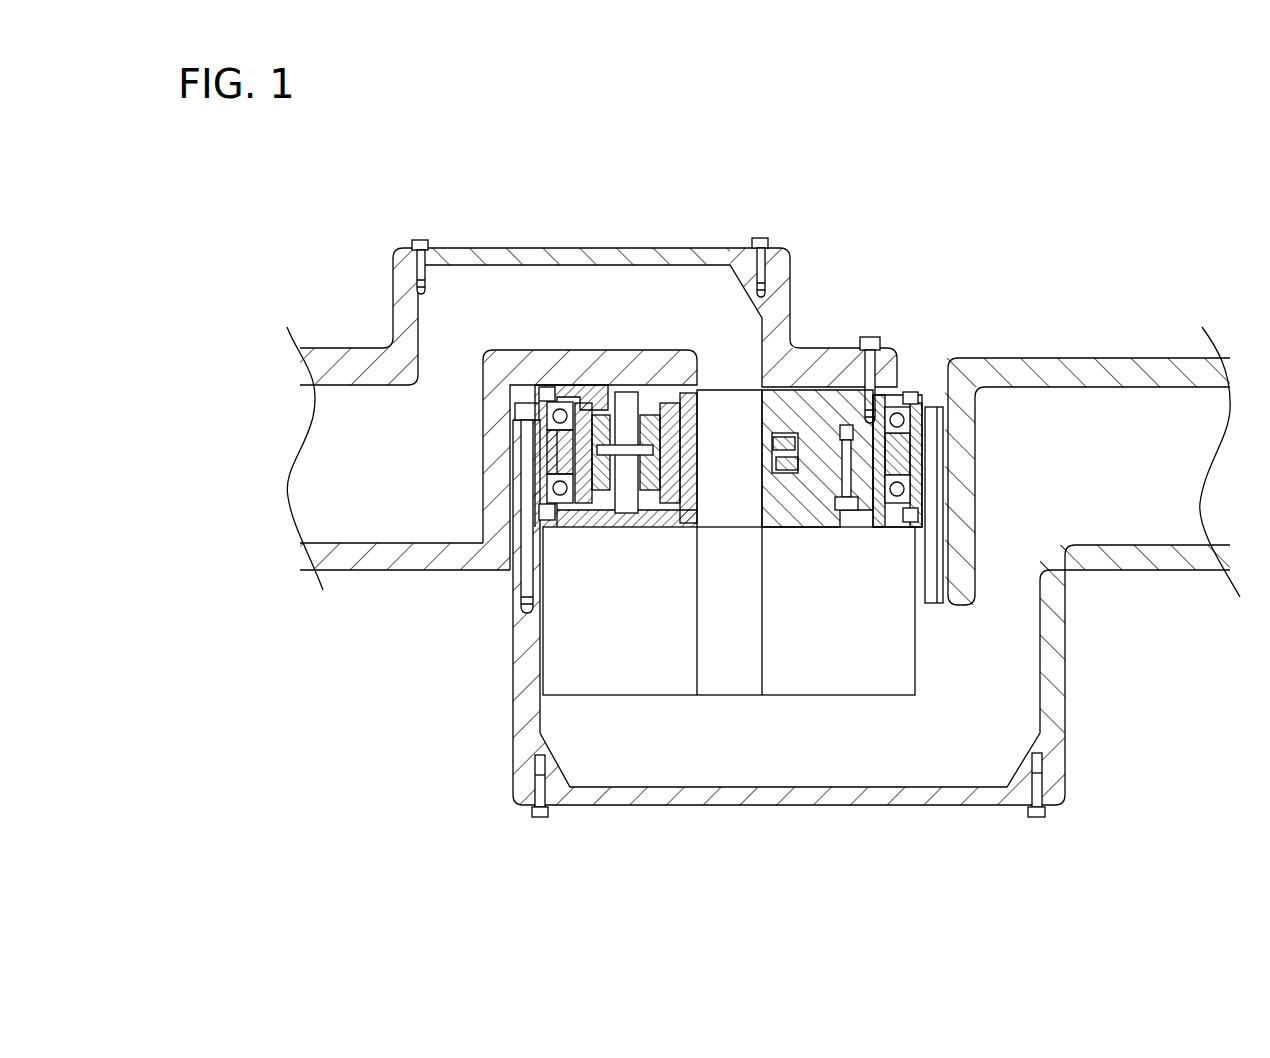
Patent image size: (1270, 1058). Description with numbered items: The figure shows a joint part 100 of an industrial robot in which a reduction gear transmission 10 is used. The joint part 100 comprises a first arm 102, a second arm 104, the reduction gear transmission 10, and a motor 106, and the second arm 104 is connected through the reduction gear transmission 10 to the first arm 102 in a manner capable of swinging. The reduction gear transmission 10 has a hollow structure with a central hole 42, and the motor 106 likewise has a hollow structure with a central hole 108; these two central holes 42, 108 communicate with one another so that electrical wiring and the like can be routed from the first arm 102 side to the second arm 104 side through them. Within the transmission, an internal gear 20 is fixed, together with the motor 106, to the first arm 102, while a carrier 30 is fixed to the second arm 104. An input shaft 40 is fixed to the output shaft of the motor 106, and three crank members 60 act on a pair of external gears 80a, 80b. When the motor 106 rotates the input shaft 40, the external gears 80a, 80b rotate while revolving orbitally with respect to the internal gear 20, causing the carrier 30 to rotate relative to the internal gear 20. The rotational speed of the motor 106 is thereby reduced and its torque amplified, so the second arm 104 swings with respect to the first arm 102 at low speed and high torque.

The reduction gear transmission 10 is at (603, 550).
The internal gear 20 is at (913, 448).
The carrier 30 is at (828, 410).
The input shaft 40 is at (678, 380).
The central hole 42 is at (703, 427).
The crank members 60 is at (600, 410).
The external gear 80a is at (600, 440).
The external gear 80b is at (550, 448).
The joint part 100 is at (1119, 152).
The first arm 102 is at (1152, 557).
The second arm 104 is at (342, 362).
The motor 106 is at (662, 667).
The central hole 108 is at (760, 663).